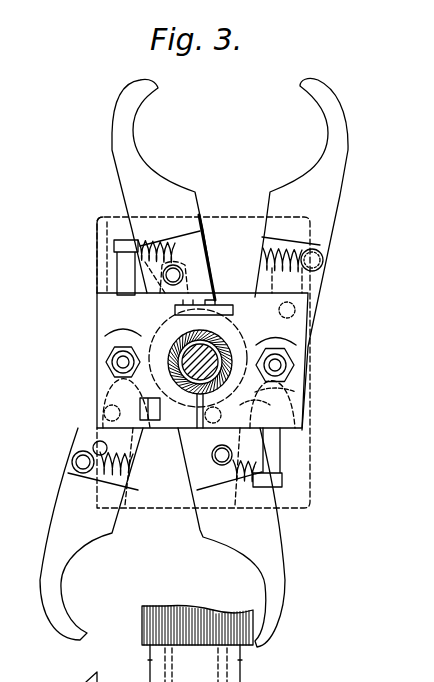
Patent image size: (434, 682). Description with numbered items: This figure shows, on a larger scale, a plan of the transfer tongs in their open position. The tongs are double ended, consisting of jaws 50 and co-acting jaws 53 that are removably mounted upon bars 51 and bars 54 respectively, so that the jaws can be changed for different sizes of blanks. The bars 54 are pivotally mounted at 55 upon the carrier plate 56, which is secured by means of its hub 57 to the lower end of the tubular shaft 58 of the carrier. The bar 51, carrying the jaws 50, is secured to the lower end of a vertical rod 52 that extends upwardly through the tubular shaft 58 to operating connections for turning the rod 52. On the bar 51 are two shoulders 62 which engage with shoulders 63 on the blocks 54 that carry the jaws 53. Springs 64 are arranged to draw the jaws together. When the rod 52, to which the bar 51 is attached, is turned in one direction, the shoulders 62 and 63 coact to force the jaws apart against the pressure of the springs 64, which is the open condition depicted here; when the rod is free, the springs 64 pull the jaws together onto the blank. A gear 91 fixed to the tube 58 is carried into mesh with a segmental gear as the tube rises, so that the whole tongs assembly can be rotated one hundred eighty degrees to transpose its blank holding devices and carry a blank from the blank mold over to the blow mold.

The jaw 50 is at (112, 146).
The jaw 53 is at (340, 158).
The bar 51 is at (196, 242).
The vertical rod 52 is at (168, 373).
The bar 54 is at (318, 281).
The pivot 55 is at (118, 361).
The carrier plate 56 is at (296, 390).
The hub 57 is at (308, 344).
The tubular shaft 58 is at (190, 393).
The shoulders 62 is at (260, 408).
The shoulders 63 is at (242, 350).
The springs 64 is at (157, 234).
The gear 91 is at (142, 617).